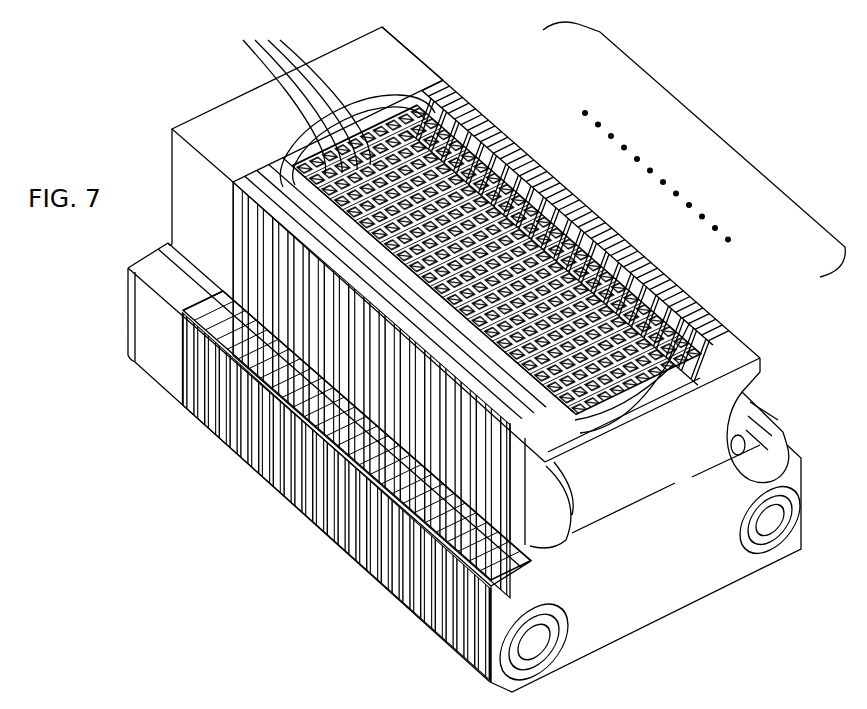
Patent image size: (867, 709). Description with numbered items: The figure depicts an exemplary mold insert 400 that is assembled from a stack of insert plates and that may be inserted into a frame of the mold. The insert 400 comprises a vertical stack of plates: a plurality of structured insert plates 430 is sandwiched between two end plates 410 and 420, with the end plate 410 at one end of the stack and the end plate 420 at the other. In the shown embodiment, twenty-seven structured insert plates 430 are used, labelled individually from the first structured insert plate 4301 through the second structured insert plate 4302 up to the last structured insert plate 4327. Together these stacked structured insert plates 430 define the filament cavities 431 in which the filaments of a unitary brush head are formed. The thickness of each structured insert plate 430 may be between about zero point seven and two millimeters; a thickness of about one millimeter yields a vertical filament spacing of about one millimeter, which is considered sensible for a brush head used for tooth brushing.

The insert 400 is at (704, 636).
The end plate 410 is at (390, 56).
The end plate 420 is at (722, 352).
The structured insert plates 430 is at (698, 118).
The filament cavities 431 is at (301, 91).
The structured insert plate 4301 is at (433, 88).
The structured insert plate 4302 is at (445, 98).
The structured insert plate 4327 is at (703, 326).